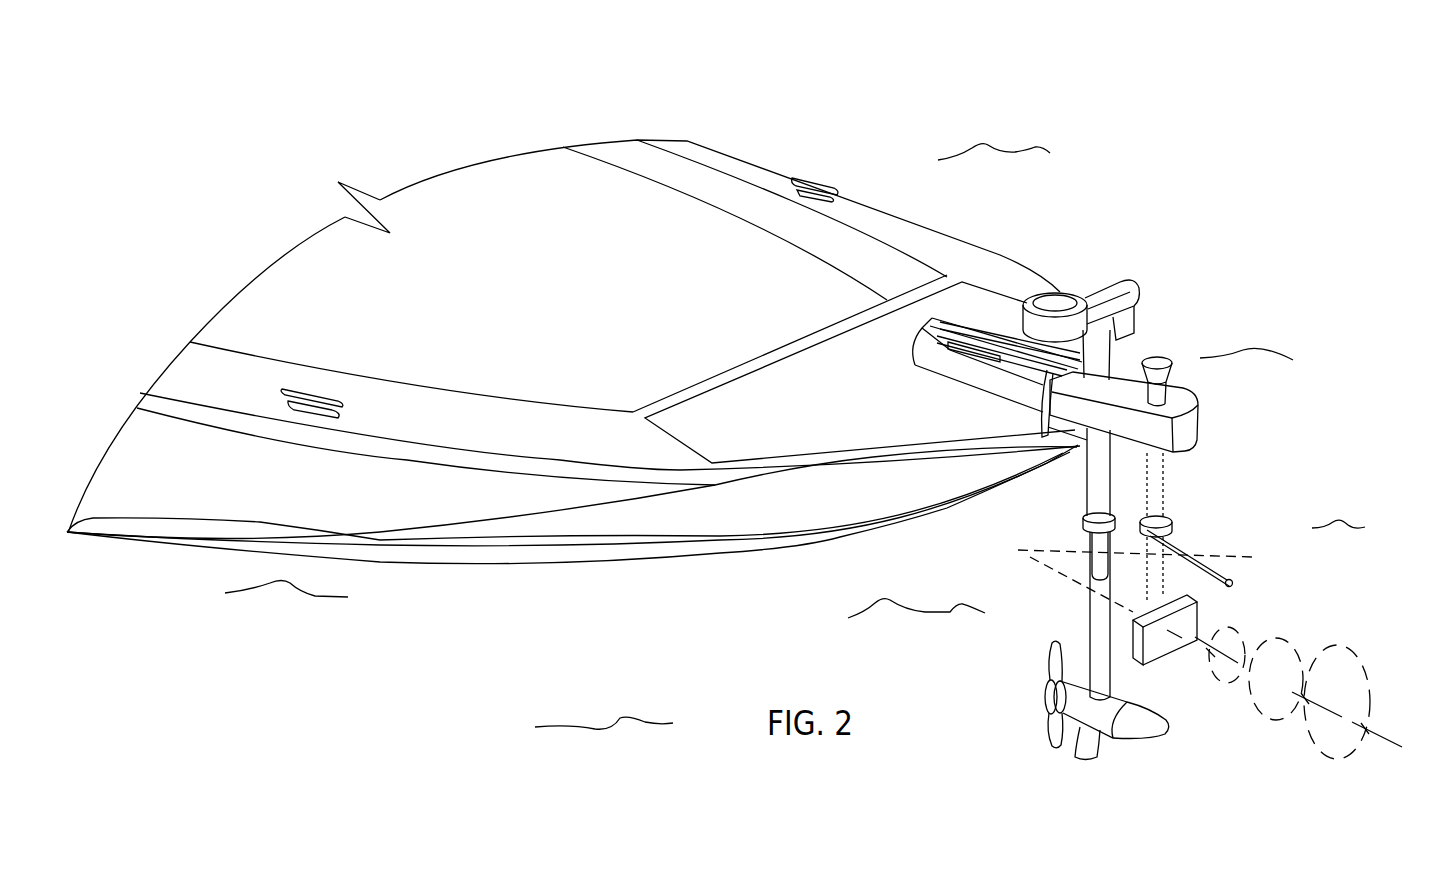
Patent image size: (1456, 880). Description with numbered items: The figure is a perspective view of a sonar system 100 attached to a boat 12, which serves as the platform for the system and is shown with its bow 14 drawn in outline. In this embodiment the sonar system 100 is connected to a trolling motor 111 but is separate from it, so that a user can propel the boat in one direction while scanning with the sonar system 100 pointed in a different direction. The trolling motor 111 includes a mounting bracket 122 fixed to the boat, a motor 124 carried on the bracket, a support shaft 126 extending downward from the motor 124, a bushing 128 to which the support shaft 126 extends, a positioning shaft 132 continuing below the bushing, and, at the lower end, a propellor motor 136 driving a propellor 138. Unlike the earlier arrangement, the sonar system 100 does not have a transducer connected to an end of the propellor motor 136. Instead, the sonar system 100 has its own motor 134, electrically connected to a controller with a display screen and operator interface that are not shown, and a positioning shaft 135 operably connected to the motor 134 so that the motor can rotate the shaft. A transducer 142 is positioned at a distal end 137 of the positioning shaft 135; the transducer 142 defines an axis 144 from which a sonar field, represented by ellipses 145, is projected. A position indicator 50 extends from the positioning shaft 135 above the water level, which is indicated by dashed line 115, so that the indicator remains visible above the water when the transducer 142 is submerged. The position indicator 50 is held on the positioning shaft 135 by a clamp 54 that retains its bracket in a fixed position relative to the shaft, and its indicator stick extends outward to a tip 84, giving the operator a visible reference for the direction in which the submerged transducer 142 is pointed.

The boat 12 is at (436, 193).
The bow 14 is at (947, 254).
The position indicator 50 is at (1217, 532).
The clamp 54 is at (1172, 525).
The tip 84 is at (1233, 583).
The sonar system 100 is at (1142, 497).
The trolling motor 111 is at (1050, 397).
The dashed line 115 is at (1150, 578).
The mounting bracket 122 is at (927, 354).
The motor 124 is at (1128, 281).
The support shaft 126 is at (1093, 490).
The bushing 128 is at (1085, 525).
The positioning shaft 132 is at (1095, 625).
The motor 134 is at (1185, 400).
The positioning shaft 135 is at (1160, 484).
The propellor motor 136 is at (1102, 713).
The distal end 137 is at (1197, 649).
The propellor 138 is at (1045, 697).
The transducer 142 is at (1146, 640).
The axis 144 is at (1387, 736).
The ellipses 145 is at (1366, 680).